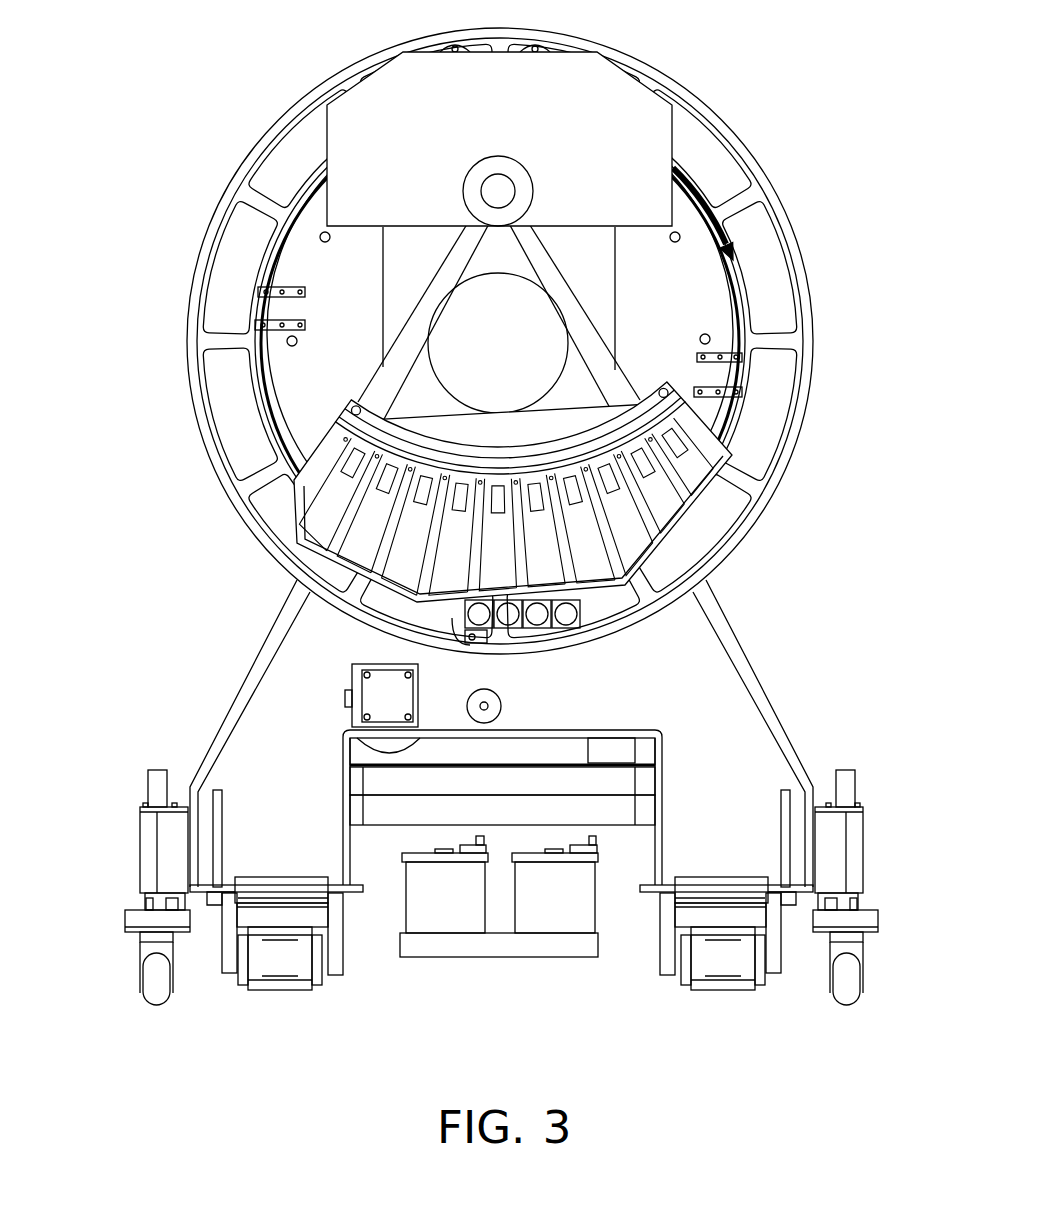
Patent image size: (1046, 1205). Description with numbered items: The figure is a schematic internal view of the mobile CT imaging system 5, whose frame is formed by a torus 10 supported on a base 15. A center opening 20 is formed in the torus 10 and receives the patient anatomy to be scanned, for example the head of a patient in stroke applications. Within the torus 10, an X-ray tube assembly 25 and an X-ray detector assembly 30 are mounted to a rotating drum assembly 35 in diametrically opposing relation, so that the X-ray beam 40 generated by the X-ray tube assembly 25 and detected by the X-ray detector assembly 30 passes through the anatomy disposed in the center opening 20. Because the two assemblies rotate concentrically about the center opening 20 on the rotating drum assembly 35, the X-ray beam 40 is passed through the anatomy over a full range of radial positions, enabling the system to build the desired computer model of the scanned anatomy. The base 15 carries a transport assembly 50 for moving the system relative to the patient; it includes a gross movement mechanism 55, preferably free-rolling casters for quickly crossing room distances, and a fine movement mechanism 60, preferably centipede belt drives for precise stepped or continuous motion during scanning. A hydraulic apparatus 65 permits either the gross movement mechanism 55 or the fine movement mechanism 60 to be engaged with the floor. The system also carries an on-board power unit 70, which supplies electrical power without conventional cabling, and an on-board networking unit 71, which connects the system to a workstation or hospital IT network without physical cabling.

The mobile CT imaging system 5 is at (168, 140).
The torus 10 is at (287, 108).
The base 15 is at (515, 768).
The center opening 20 is at (544, 393).
The X-ray tube assembly 25 is at (423, 228).
The X-ray detector assembly 30 is at (337, 412).
The rotating drum assembly 35 is at (255, 337).
The X-ray beam 40 is at (575, 293).
The transport assembly 50 is at (501, 980).
The gross movement mechanism 55 is at (132, 987).
The fine movement mechanism 60 is at (501, 983).
The hydraulic apparatus 65 is at (498, 916).
The on-board power unit 70 is at (472, 836).
The on-board networking unit 71 is at (635, 752).